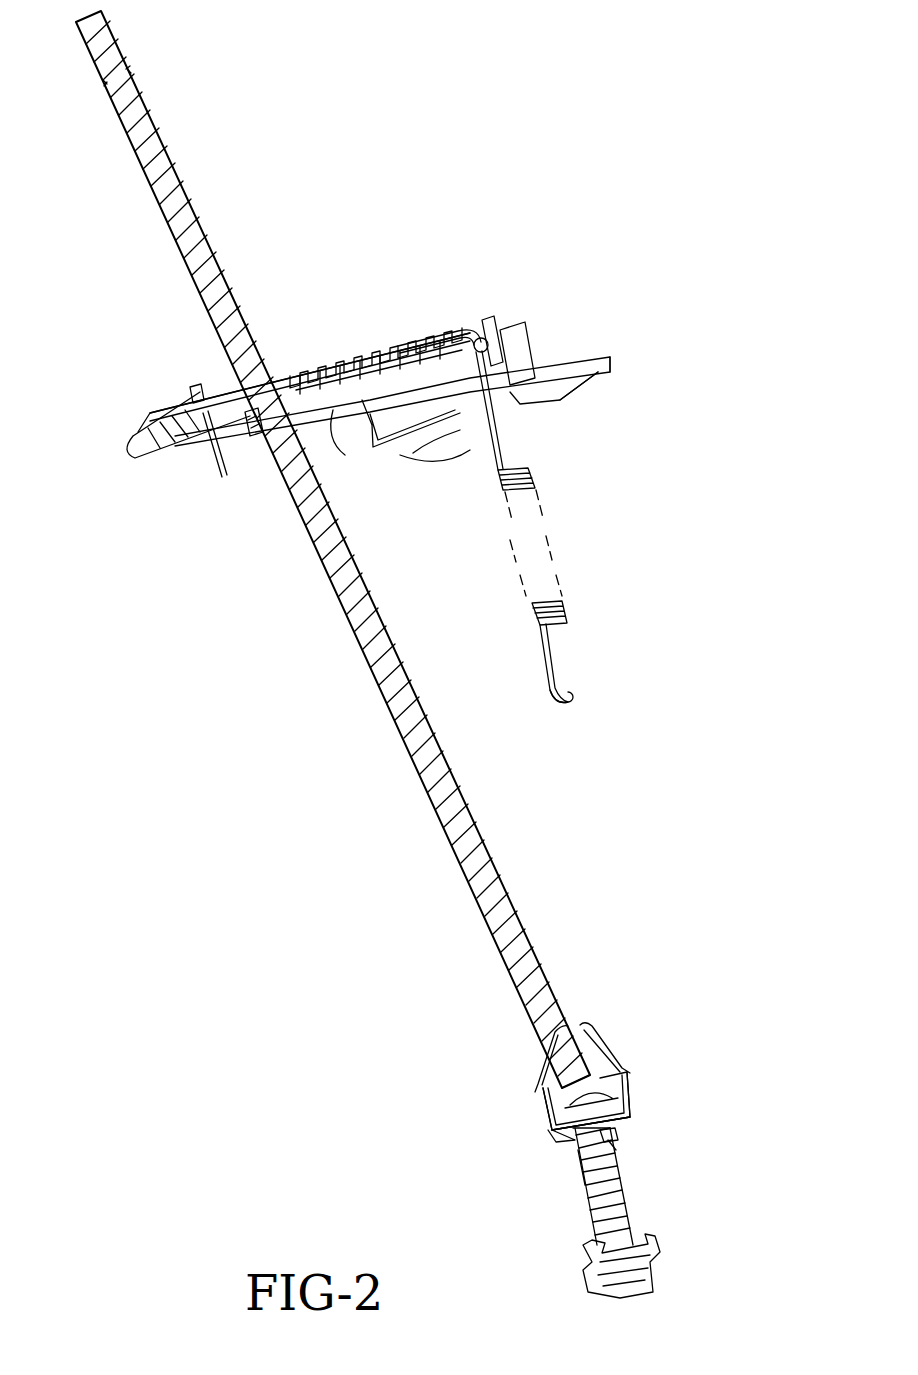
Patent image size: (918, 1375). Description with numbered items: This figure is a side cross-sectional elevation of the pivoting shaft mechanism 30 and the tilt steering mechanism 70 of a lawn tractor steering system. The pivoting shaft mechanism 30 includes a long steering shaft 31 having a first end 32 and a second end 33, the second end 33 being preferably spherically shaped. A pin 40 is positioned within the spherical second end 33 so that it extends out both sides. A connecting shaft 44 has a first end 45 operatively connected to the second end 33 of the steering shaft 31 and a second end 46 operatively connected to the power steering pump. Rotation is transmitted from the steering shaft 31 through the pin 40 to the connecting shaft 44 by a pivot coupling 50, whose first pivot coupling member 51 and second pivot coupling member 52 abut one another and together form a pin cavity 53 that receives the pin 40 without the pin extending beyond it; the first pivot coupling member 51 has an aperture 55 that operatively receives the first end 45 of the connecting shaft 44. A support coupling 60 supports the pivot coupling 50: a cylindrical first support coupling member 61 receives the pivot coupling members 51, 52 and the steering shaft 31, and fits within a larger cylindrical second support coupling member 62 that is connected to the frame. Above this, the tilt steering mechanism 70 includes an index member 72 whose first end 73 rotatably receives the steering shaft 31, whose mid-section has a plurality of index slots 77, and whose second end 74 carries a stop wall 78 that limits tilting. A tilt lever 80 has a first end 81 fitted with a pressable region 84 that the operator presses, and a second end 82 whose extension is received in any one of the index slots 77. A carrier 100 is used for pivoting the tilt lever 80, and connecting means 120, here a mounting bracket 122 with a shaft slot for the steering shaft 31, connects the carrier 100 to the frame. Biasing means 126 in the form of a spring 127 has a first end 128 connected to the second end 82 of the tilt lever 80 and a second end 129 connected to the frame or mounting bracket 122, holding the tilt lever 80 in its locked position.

The pivoting shaft mechanism 30 is at (692, 1036).
The steering shaft 31 is at (330, 540).
The first end 32 is at (104, 86).
The second end 33 is at (555, 992).
The pin 40 is at (625, 1099).
The connecting shaft 44 is at (620, 1200).
The first end 45 is at (582, 1168).
The second end 46 is at (652, 1264).
The pivot coupling 50 is at (455, 1108).
The first pivot coupling member 51 is at (618, 1132).
The second pivot coupling member 52 is at (622, 1072).
The pin cavity 53 is at (543, 1080).
The aperture 55 is at (615, 1155).
The support coupling 60 is at (460, 1153).
The first support coupling member 61 is at (555, 1138).
The second support coupling member 62 is at (630, 1097).
The tilt steering mechanism 70 is at (537, 200).
The index member 72 is at (340, 412).
The first end 73 is at (256, 438).
The second end 74 is at (528, 350).
The index slots 77 is at (366, 356).
The stop wall 78 is at (497, 318).
The tilt lever 80 is at (292, 380).
The first end 81 is at (188, 396).
The second end 82 is at (467, 330).
The pressable region 84 is at (128, 418).
The carrier 100 is at (548, 360).
The connecting means 120 is at (617, 404).
The mounting bracket 122 is at (445, 440).
The biasing means 126 is at (598, 561).
The spring 127 is at (553, 545).
The first end 128 is at (530, 406).
The second end 129 is at (575, 705).